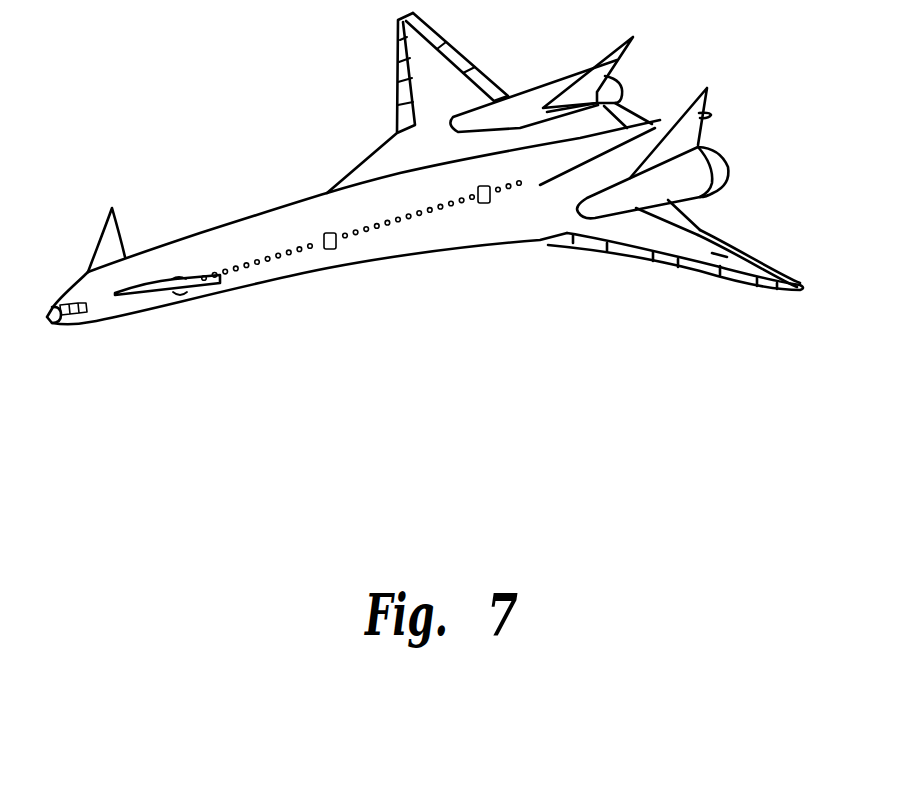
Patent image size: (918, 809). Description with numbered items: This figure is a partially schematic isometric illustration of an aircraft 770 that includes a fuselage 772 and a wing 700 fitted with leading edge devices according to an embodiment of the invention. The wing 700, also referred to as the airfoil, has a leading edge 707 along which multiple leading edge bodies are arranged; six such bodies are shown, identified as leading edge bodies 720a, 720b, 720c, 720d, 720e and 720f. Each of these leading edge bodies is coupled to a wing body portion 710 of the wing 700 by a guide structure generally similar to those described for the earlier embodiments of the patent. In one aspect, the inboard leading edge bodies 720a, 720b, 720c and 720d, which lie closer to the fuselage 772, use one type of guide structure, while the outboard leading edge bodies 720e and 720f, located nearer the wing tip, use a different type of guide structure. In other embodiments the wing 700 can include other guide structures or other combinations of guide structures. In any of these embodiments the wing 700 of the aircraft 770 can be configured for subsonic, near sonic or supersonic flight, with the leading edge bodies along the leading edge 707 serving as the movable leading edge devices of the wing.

The wing 700 is at (387, 168).
The leading edge 707 is at (669, 336).
The wing body portion 710 is at (712, 253).
The leading edge body 720a is at (568, 237).
The leading edge body 720b is at (583, 247).
The leading edge body 720c is at (617, 250).
The leading edge body 720d is at (653, 259).
The leading edge body 720e is at (713, 271).
The leading edge body 720f is at (760, 284).
The aircraft 770 is at (366, 284).
The fuselage 772 is at (208, 230).